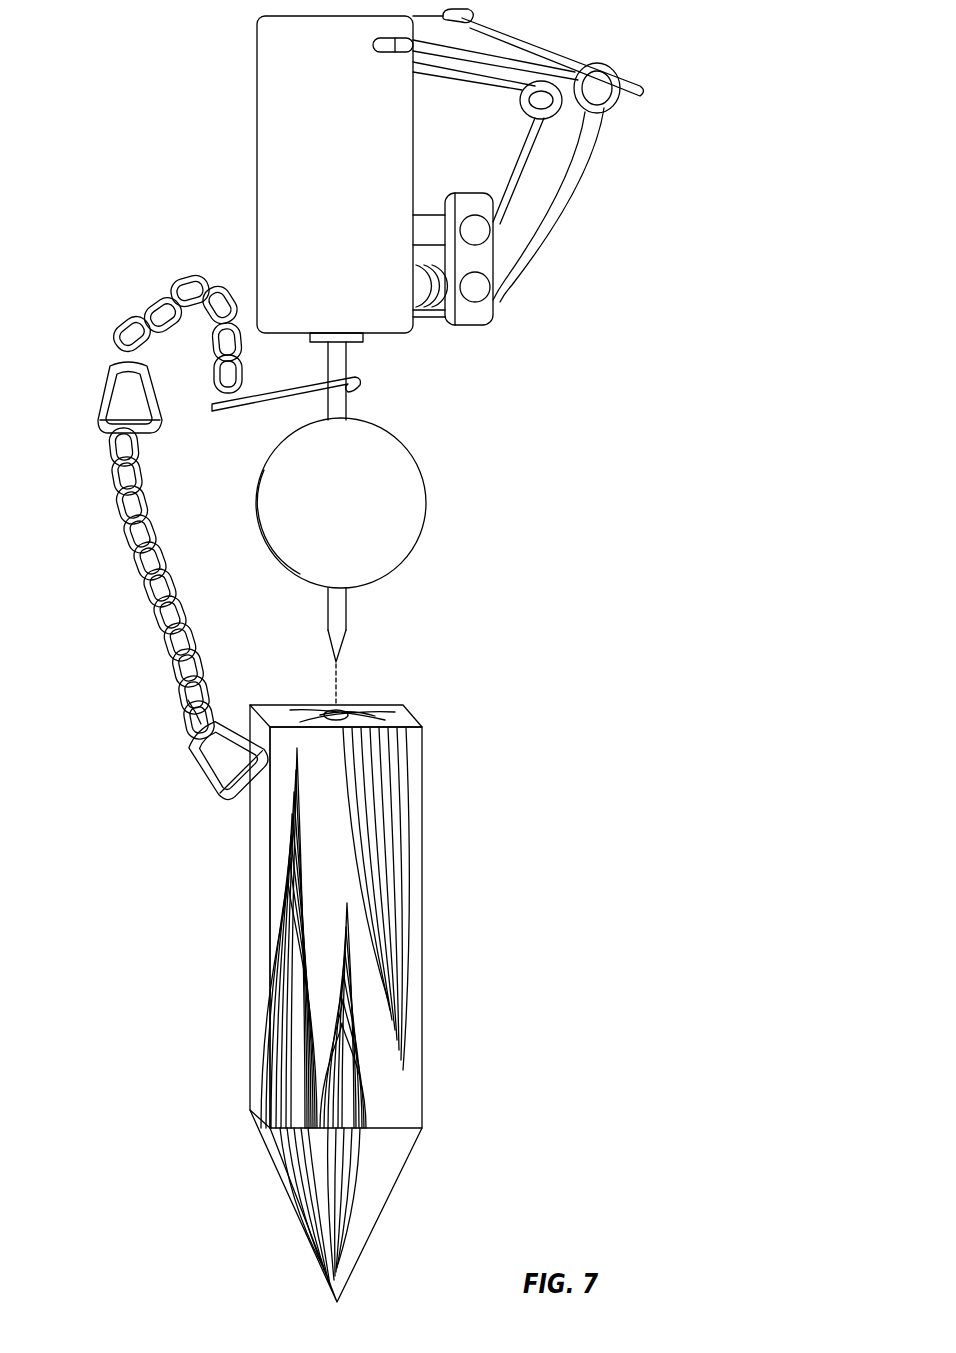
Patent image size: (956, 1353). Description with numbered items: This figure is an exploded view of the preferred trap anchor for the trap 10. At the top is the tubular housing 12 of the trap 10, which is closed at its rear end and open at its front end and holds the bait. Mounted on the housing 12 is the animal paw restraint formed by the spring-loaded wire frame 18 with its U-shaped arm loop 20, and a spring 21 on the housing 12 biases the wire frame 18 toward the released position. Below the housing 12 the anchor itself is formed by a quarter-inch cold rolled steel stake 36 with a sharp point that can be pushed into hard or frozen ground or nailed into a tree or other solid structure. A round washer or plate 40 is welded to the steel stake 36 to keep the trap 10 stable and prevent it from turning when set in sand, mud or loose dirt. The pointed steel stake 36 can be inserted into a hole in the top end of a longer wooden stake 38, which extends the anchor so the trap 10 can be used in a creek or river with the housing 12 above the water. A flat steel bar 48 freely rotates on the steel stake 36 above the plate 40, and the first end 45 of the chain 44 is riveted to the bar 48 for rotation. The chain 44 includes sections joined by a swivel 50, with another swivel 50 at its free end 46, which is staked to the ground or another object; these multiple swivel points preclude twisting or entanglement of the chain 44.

The trap 10 is at (100, 82).
The tubular body or housing 12 is at (268, 170).
The spring-loaded wire frame 18 is at (570, 183).
The U-shaped arm loop 20 is at (477, 77).
The spring 21 is at (448, 322).
The steel stake 36 is at (345, 612).
The wooden stake 38 is at (410, 815).
The round washer or plate 40 is at (418, 502).
The chain 44 is at (115, 518).
The first end of the chain 45 is at (213, 377).
The free end of the chain 46 is at (185, 722).
The flat steel bar 48 is at (267, 393).
The swivel 50 is at (100, 397).